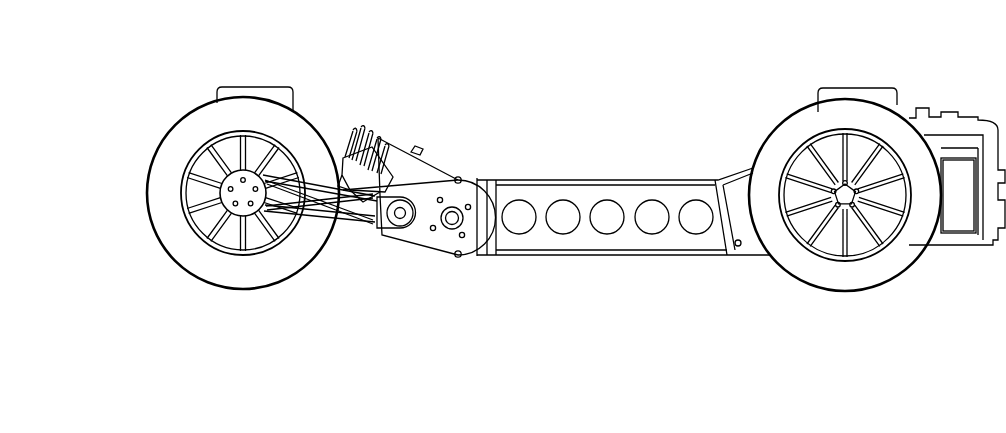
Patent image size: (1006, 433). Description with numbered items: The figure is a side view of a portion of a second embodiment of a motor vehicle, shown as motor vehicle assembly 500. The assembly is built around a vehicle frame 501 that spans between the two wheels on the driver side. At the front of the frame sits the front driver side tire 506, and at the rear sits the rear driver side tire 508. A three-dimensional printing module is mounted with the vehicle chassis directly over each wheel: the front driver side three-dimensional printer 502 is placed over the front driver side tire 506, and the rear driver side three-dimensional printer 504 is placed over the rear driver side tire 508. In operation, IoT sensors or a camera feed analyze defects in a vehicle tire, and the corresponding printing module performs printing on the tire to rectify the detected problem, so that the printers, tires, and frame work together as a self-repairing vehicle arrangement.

The motor vehicle assembly 500 is at (613, 110).
The vehicle frame 501 is at (573, 257).
The front driver side 3D printer 502 is at (238, 87).
The rear driver side 3D printer 504 is at (868, 87).
The front driver side tire 506 is at (310, 122).
The rear driver side tire 508 is at (885, 282).